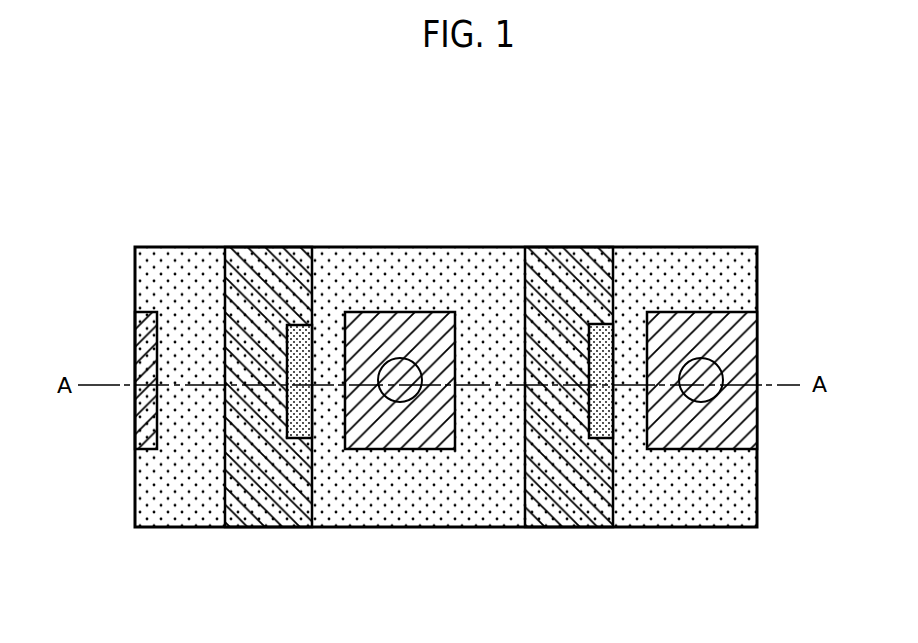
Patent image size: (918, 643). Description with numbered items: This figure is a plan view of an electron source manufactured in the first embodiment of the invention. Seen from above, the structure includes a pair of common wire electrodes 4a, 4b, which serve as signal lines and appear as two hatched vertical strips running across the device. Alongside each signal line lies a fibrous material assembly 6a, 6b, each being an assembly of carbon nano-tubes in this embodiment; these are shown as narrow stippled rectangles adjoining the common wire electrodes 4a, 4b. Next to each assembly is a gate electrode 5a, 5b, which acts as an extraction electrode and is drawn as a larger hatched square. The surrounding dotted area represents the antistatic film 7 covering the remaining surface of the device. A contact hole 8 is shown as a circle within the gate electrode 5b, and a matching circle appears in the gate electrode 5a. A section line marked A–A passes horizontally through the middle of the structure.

The common wire electrode (signal line) 4a is at (258, 247).
The common wire electrode (signal line) 4b is at (566, 256).
The gate electrode (extraction electrode) 5a is at (402, 327).
The gate electrode (extraction electrode) 5b is at (746, 423).
The fibrous material assembly 6a is at (300, 323).
The fibrous material assembly 6b is at (600, 323).
The antistatic film 7 is at (485, 290).
The contact hole 8 is at (712, 349).